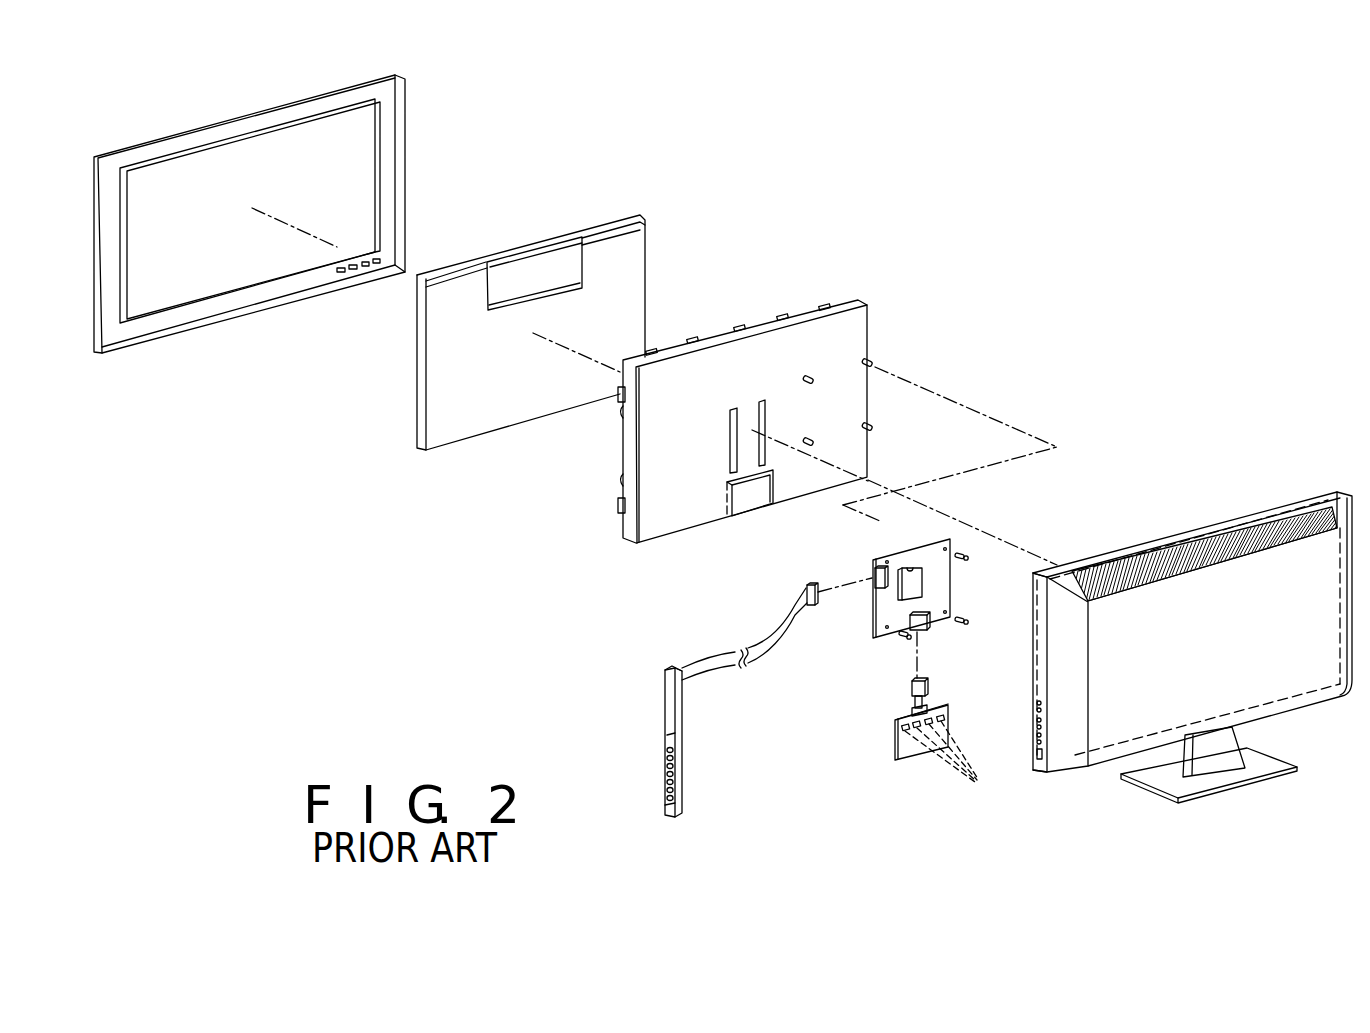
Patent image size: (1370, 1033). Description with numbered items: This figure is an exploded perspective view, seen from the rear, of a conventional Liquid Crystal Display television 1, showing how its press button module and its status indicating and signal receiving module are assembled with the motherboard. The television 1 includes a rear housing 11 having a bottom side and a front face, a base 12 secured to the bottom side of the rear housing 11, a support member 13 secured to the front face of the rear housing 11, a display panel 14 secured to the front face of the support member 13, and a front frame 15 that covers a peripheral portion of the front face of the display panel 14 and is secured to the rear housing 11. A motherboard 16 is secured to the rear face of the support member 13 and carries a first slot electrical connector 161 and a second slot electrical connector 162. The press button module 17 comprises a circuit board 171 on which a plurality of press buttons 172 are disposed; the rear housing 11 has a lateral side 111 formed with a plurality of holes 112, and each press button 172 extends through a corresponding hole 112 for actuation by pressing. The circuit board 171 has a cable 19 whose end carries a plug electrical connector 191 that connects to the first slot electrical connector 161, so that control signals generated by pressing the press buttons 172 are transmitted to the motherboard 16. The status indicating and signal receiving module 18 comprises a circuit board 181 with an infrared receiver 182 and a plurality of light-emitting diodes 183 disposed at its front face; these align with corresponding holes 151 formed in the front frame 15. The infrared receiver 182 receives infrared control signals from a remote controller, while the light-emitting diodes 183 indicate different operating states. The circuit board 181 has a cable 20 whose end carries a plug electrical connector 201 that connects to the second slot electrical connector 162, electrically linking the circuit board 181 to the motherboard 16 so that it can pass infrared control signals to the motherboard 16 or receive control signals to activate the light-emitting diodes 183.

The Liquid Crystal Display television 1 is at (673, 163).
The rear housing 11 is at (1248, 512).
The lateral side 111 is at (1035, 653).
The holes 112 is at (1038, 760).
The base 12 is at (1230, 762).
The support member 13 is at (838, 333).
The display panel 14 is at (448, 412).
The front frame 15 is at (402, 185).
The holes 151 is at (364, 272).
The motherboard 16 is at (905, 551).
The first slot electrical connector 161 is at (868, 569).
The second slot electrical connector 162 is at (920, 610).
The press button module 17 is at (662, 683).
The circuit board 171 is at (670, 734).
The press buttons 172 is at (665, 770).
The status indicating and signal receiving module 18 is at (908, 773).
The circuit board 181 is at (902, 742).
The infrared receiver 182 is at (948, 707).
The light-emitting diodes 183 is at (959, 766).
The cable 19 is at (782, 625).
The plug electrical connector 191 is at (808, 585).
The cable 20 is at (915, 703).
The plug electrical connector 201 is at (913, 687).